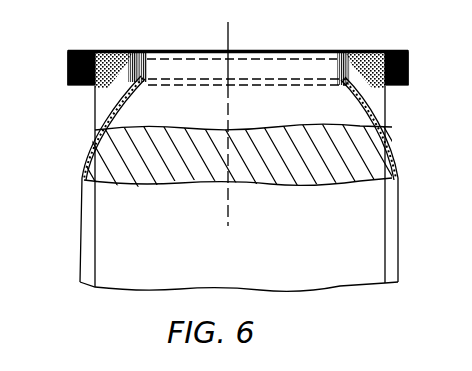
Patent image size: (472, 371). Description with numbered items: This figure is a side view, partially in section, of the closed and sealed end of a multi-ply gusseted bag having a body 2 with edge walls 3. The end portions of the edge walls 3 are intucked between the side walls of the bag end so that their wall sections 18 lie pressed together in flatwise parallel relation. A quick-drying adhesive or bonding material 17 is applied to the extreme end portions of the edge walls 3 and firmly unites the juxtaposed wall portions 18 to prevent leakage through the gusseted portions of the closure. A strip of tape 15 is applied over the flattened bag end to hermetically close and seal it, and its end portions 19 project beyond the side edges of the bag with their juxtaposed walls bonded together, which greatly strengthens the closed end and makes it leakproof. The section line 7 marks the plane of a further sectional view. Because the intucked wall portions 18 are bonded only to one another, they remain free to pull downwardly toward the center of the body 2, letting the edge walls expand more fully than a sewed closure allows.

The body 2 is at (339, 265).
The edge walls 3 is at (84, 222).
The section line 7 is at (238, 119).
The strip of tape 15 is at (311, 51).
The adhesive or bonding material 17 is at (96, 86).
The wall sections 18 is at (132, 62).
The end portions of the strip of tape 19 is at (68, 70).